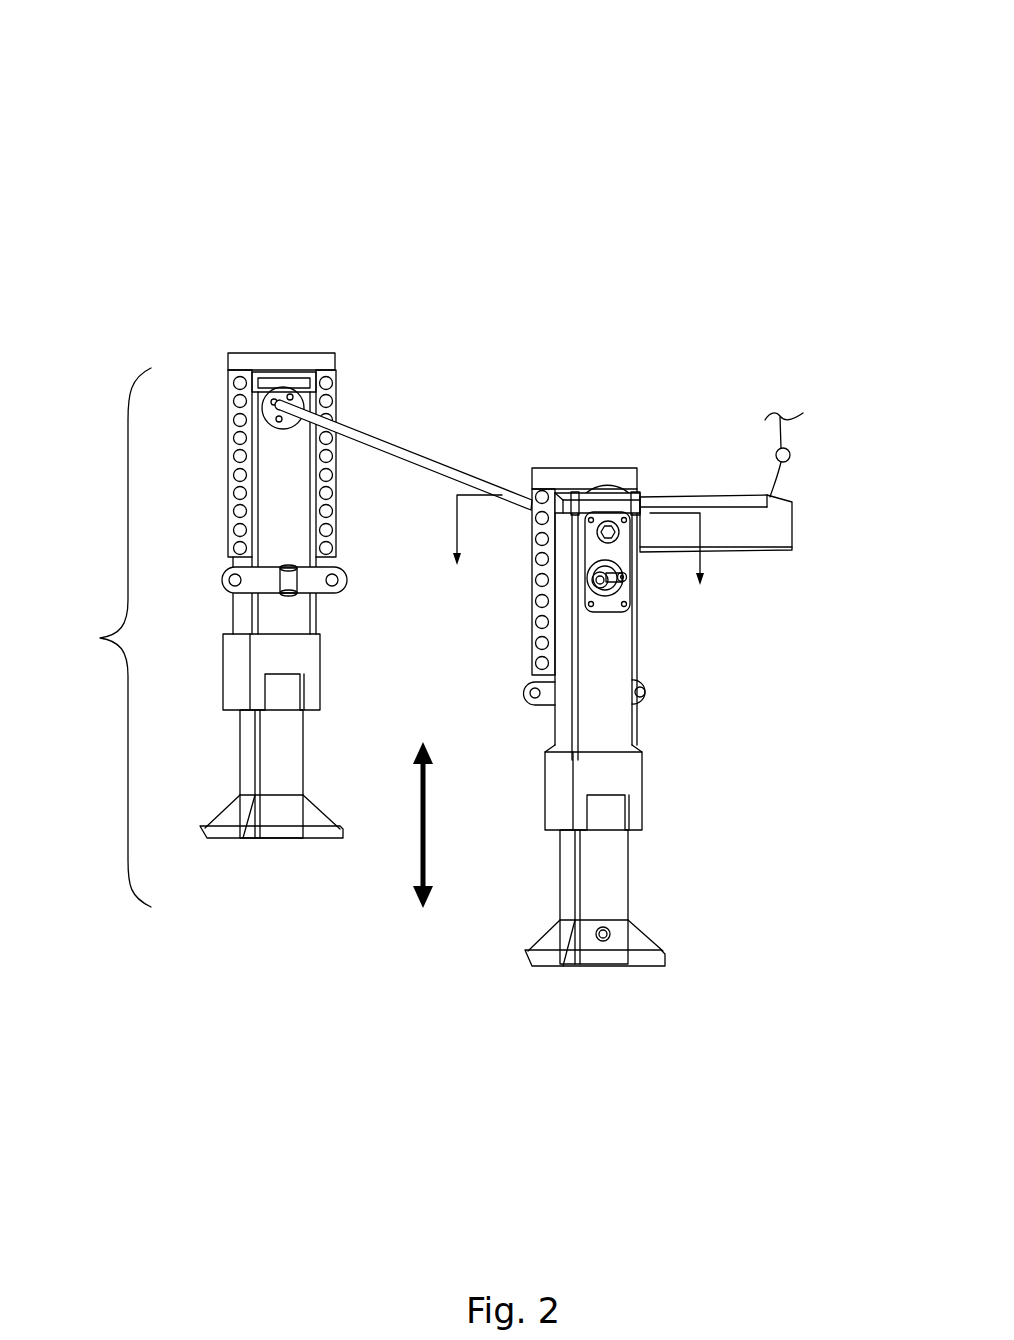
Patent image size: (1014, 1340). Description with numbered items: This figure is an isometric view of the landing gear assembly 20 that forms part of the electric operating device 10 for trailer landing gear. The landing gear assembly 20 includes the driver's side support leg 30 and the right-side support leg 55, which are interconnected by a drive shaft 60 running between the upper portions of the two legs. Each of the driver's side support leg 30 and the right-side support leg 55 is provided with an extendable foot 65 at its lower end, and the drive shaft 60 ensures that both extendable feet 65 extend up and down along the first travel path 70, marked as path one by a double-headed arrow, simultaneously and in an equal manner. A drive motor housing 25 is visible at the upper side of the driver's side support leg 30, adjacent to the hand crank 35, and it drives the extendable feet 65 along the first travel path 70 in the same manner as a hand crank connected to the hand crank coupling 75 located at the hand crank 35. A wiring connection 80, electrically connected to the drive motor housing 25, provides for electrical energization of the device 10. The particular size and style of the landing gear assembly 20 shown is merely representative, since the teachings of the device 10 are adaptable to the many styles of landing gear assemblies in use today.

The device 10 is at (113, 181).
The landing gear assembly 20 is at (88, 663).
The drive motor housing 25 is at (748, 563).
The driver's side support leg 30 is at (613, 687).
The hand crank 35 is at (608, 584).
The right-side support leg 55 is at (267, 457).
The drive shaft 60 is at (430, 453).
The extendable foot 65 is at (282, 743).
The first travel path 70 is at (418, 852).
The hand crank coupling 75 is at (626, 580).
The wiring connection 80 is at (790, 455).